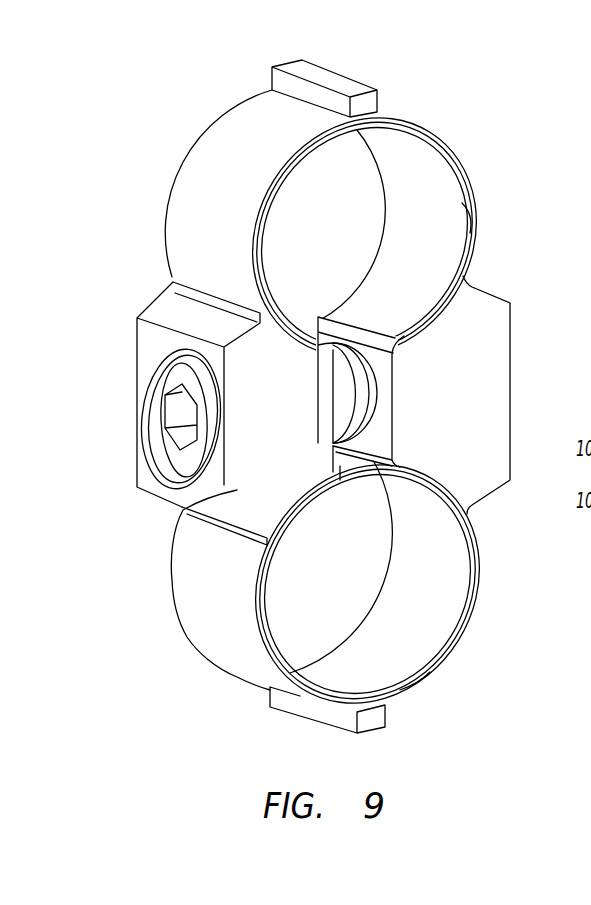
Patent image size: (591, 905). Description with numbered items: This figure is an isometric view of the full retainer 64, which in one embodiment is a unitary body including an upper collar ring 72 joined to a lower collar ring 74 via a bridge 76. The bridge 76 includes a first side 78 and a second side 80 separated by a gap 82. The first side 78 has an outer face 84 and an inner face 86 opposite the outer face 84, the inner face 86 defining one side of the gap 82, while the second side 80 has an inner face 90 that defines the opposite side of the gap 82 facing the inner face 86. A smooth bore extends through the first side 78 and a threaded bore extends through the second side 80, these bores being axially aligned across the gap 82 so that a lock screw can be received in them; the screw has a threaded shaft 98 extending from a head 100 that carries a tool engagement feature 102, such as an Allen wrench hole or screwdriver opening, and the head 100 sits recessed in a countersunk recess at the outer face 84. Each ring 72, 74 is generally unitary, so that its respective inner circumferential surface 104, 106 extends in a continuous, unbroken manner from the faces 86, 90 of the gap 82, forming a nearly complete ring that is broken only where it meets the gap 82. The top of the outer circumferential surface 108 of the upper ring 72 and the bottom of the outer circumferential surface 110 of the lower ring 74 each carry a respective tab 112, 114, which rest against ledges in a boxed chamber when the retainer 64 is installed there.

The retainer 64 is at (222, 710).
The upper collar ring 72 is at (453, 150).
The lower collar ring 74 is at (480, 571).
The bridge 76 is at (293, 488).
The first side 78 is at (182, 508).
The second side 80 is at (513, 390).
The gap 82 is at (342, 460).
The outer face 84 is at (145, 480).
The inner face 86 is at (332, 352).
The inner face 90 is at (380, 362).
The threaded shaft 98 is at (358, 372).
The head 100 is at (167, 447).
The tool engagement feature 102 is at (173, 410).
The inner circumferential surface 104 is at (455, 203).
The inner circumferential surface 106 is at (403, 660).
The outer circumferential surface 108 is at (240, 122).
The outer circumferential surface 110 is at (212, 636).
The tab 112 is at (343, 83).
The tab 114 is at (373, 725).